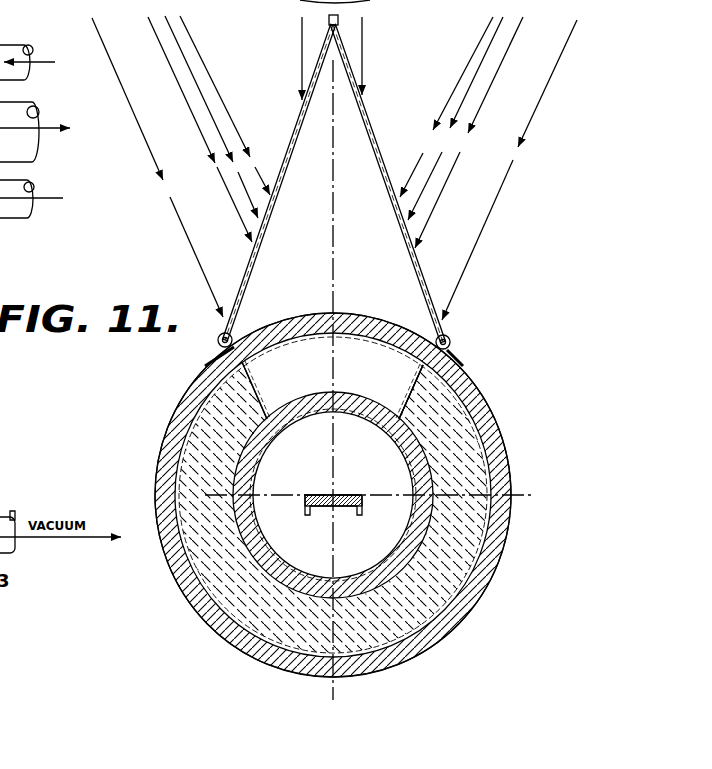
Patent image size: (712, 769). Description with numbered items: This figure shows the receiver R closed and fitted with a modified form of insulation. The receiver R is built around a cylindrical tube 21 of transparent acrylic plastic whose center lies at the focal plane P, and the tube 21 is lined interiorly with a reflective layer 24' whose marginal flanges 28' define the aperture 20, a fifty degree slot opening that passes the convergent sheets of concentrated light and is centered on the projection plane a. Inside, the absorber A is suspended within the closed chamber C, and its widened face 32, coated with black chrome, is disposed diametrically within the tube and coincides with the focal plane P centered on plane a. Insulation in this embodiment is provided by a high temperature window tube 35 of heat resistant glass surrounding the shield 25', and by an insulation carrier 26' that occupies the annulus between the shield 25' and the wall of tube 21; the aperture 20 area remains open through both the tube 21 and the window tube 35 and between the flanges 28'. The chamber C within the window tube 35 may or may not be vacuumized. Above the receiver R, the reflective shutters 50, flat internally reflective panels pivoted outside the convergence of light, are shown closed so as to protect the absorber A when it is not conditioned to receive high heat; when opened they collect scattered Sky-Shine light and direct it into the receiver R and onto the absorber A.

The reflective shutters 50 is at (298, 121).
The projection plane a is at (345, 257).
The receiver R is at (203, 375).
The cylindrical tube 21 is at (186, 579).
The reflective layer 24' is at (287, 495).
The insulation carrier 26' is at (342, 509).
The marginal flanges 28' is at (332, 390).
The aperture 20 is at (332, 390).
The high temperature window tube 35 is at (408, 428).
The shield 25' is at (333, 495).
The focal plane P is at (471, 487).
The closed chamber C is at (333, 495).
The widened face 32 is at (323, 492).
The absorber A is at (356, 489).